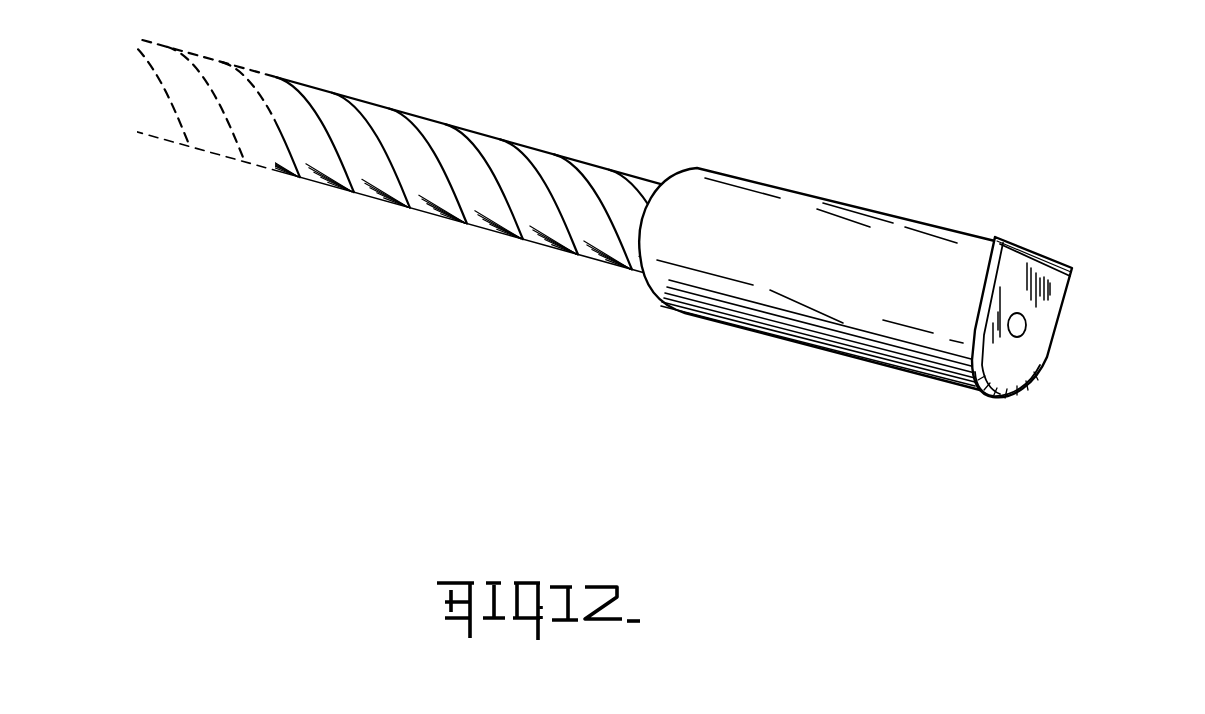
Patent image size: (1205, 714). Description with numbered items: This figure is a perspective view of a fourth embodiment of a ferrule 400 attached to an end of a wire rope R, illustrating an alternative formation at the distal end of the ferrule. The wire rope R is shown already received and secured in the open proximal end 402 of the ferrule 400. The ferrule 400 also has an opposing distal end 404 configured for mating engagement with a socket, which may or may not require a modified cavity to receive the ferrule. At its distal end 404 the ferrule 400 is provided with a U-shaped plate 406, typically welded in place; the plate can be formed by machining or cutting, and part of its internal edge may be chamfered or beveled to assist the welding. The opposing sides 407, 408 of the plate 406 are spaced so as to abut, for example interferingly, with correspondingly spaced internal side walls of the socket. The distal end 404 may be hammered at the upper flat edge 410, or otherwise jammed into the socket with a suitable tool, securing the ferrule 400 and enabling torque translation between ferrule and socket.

The wire rope R is at (420, 210).
The ferrule 400 is at (907, 289).
The open proximal end 402 is at (695, 168).
The distal end 404 is at (980, 397).
The U-shaped plate 406 is at (1047, 320).
The side of plate 407 is at (985, 293).
The side of plate 408 is at (1067, 293).
The upper flat edge 410 is at (1030, 247).